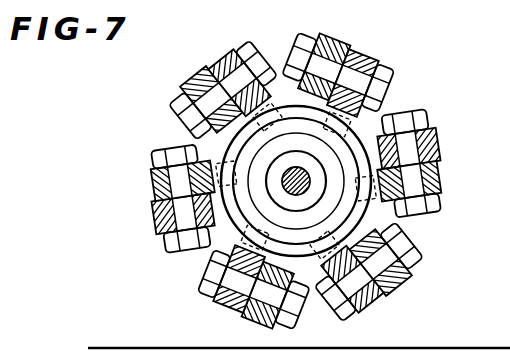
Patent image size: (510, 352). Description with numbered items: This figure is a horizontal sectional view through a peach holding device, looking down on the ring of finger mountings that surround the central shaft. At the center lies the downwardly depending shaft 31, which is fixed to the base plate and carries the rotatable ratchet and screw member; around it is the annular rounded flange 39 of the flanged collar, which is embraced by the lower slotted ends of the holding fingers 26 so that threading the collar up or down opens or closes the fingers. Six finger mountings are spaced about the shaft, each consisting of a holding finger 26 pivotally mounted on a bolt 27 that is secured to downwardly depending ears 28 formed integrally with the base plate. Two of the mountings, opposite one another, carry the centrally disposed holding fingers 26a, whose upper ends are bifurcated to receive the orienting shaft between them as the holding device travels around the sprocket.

The holding finger 26 is at (233, 45).
The centrally disposed holding finger 26a is at (438, 185).
The bolt 27 is at (260, 47).
The downwardly depending ear 28 is at (193, 67).
The downwardly depending shaft 31 is at (300, 167).
The annular rounded flange 39 is at (237, 225).